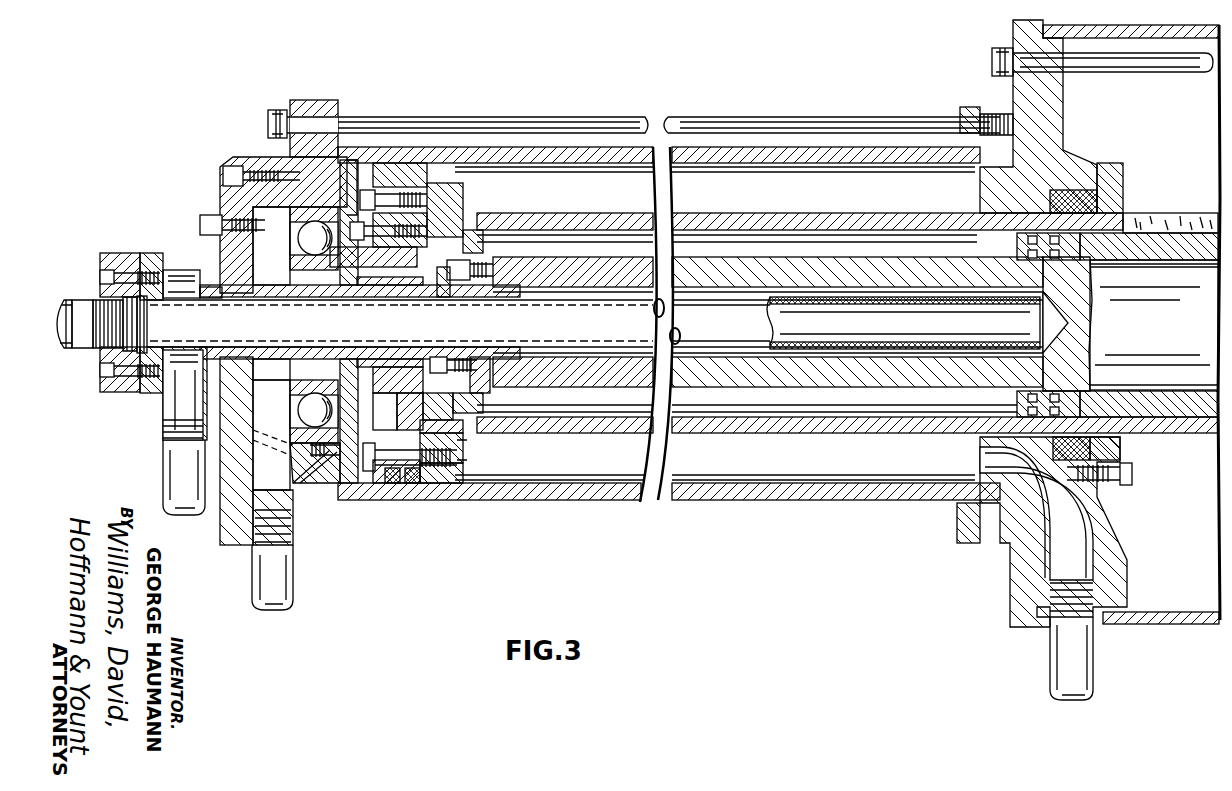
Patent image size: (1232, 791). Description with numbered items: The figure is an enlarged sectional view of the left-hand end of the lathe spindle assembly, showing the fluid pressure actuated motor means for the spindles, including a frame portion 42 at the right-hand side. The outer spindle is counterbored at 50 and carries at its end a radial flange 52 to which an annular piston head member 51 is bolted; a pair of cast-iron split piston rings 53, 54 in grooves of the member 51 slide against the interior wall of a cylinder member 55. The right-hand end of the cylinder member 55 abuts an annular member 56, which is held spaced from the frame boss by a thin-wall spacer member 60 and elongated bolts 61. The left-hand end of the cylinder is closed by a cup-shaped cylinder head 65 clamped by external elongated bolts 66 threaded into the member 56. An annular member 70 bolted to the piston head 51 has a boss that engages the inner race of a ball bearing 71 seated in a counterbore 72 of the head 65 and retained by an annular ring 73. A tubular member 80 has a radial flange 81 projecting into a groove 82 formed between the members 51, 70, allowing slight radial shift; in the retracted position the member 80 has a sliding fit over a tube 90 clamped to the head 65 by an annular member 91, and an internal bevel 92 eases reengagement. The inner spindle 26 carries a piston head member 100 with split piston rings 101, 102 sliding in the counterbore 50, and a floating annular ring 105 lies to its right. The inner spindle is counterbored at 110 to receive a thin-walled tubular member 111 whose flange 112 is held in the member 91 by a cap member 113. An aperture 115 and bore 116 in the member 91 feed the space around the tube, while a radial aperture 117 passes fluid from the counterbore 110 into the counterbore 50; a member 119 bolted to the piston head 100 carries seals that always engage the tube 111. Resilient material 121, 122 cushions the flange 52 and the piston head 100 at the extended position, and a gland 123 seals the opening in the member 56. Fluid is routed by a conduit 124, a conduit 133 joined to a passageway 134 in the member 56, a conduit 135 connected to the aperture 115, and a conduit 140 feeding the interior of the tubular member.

The inner spindle 26 is at (1086, 328).
The base casting 42 is at (1180, 219).
The counterbore 50 is at (845, 229).
The piston head member 51 is at (447, 183).
The radial flange 52 is at (455, 470).
The split piston ring 53 is at (392, 486).
The split piston ring 54 is at (411, 486).
The cylinder member 55 is at (487, 147).
The annular member 56 is at (1017, 90).
The spacer member 60 is at (1155, 27).
The elongated bolts 61 is at (1120, 74).
The cylinder head 65 is at (340, 102).
The elongated bolts 66 is at (608, 121).
The annular member 70 is at (350, 380).
The ball bearing 71 is at (298, 240).
The counterbore 72 is at (265, 285).
The annular ring 73 is at (347, 192).
The tubular member 80 is at (420, 293).
The radial flange 81 is at (398, 398).
The groove 82 is at (410, 415).
The tube 90 is at (268, 362).
The annular member 91 is at (140, 405).
The internal bevel 92 is at (365, 285).
The piston head member 100 is at (496, 251).
The split-ring piston ring 101 is at (447, 230).
The split-ring piston ring 102 is at (470, 238).
The floating piston head ring 105 is at (1027, 245).
The counterbore 110 is at (841, 342).
The tubular member 111 is at (910, 342).
The flange 112 is at (147, 318).
The cap member 113 is at (118, 258).
The aperture 115 is at (160, 262).
The bore 116 is at (226, 300).
The radial aperture 117 is at (495, 346).
The seal member 119 is at (441, 300).
The resilient material 121 is at (466, 450).
The resilient material 122 is at (484, 405).
The gland 123 is at (1127, 196).
The conduit 124 is at (296, 590).
The conduit 133 is at (1085, 672).
The passageway 134 is at (1073, 540).
The conduit 135 is at (205, 512).
The conduit 140 is at (84, 348).